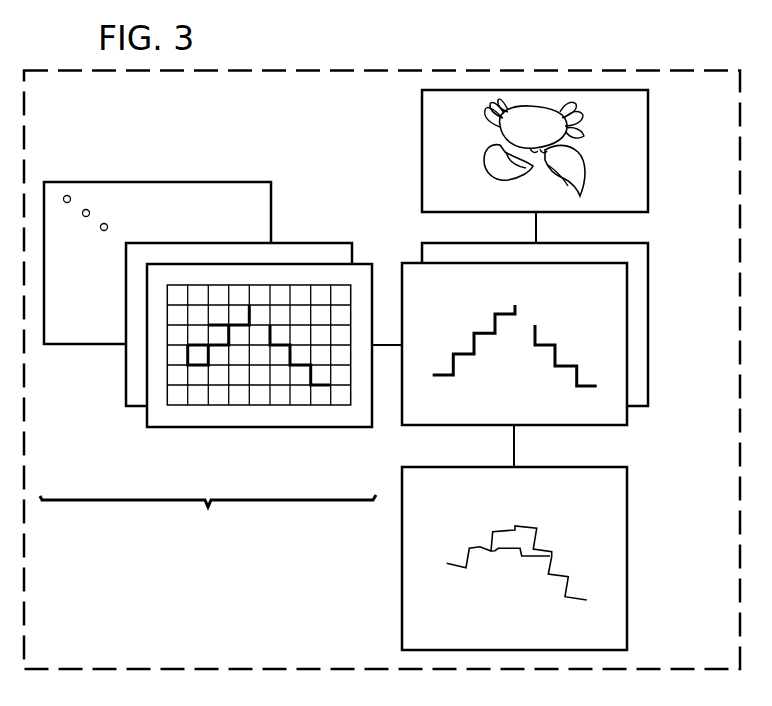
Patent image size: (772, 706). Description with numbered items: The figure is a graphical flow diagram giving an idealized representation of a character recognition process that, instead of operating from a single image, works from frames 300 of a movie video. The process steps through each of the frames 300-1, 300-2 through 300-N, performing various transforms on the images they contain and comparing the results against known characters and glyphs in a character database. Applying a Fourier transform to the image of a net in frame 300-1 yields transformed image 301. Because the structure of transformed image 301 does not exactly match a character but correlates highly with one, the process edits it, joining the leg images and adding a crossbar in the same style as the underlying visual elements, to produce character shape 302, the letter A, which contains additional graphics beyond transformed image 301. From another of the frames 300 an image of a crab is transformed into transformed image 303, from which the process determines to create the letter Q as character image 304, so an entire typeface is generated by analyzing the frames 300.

The frames 300 is at (208, 516).
The frame 300-1 is at (258, 427).
The frame 300-2 is at (310, 243).
The frame 300-N is at (157, 182).
The transformed image 301 is at (627, 425).
The character shape 302 is at (627, 558).
The transformed image 303 is at (648, 322).
The character image 304 is at (648, 130).